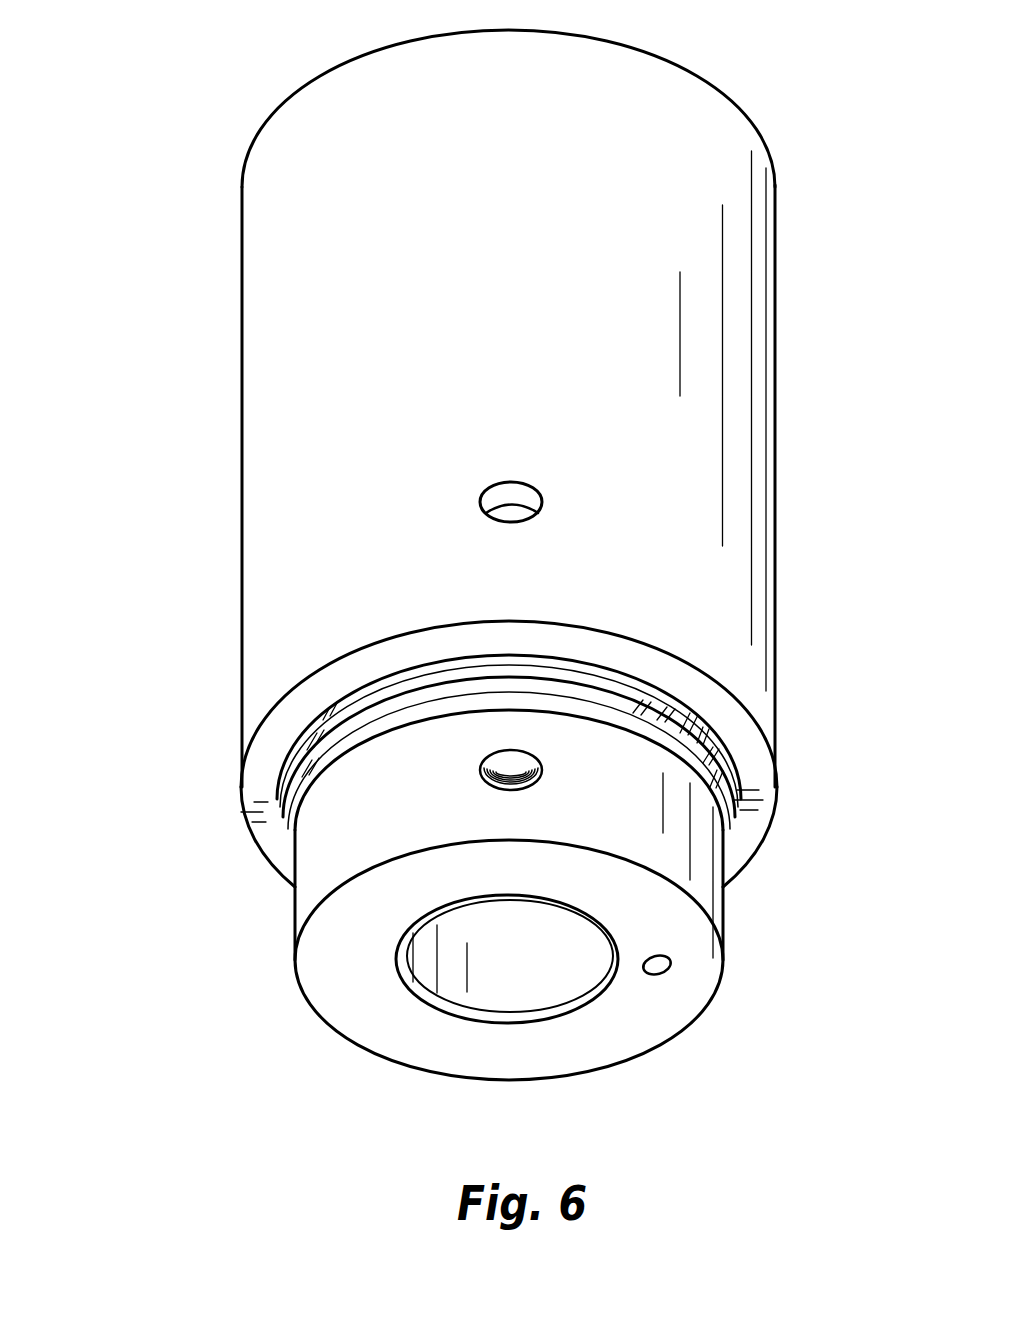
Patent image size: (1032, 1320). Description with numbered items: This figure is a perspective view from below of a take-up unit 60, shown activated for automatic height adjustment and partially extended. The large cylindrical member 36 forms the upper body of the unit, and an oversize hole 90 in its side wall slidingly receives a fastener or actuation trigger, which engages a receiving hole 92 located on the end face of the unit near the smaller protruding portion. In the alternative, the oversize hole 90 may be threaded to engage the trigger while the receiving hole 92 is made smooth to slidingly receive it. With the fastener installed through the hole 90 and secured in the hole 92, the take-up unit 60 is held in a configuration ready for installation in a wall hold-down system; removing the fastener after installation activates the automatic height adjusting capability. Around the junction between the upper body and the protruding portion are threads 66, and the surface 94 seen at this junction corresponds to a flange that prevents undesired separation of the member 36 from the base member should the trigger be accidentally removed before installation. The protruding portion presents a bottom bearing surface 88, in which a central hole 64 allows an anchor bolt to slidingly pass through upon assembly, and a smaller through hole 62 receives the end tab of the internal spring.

The take-up unit 60 is at (166, 309).
The member 36 is at (694, 186).
The oversize hole 90 is at (510, 493).
The surface 94 is at (708, 694).
The receiving hole 92 is at (480, 775).
The threads 66 is at (727, 812).
The bottom bearing surface 88 is at (363, 1020).
The hole 64 is at (531, 969).
The hole 62 is at (672, 967).